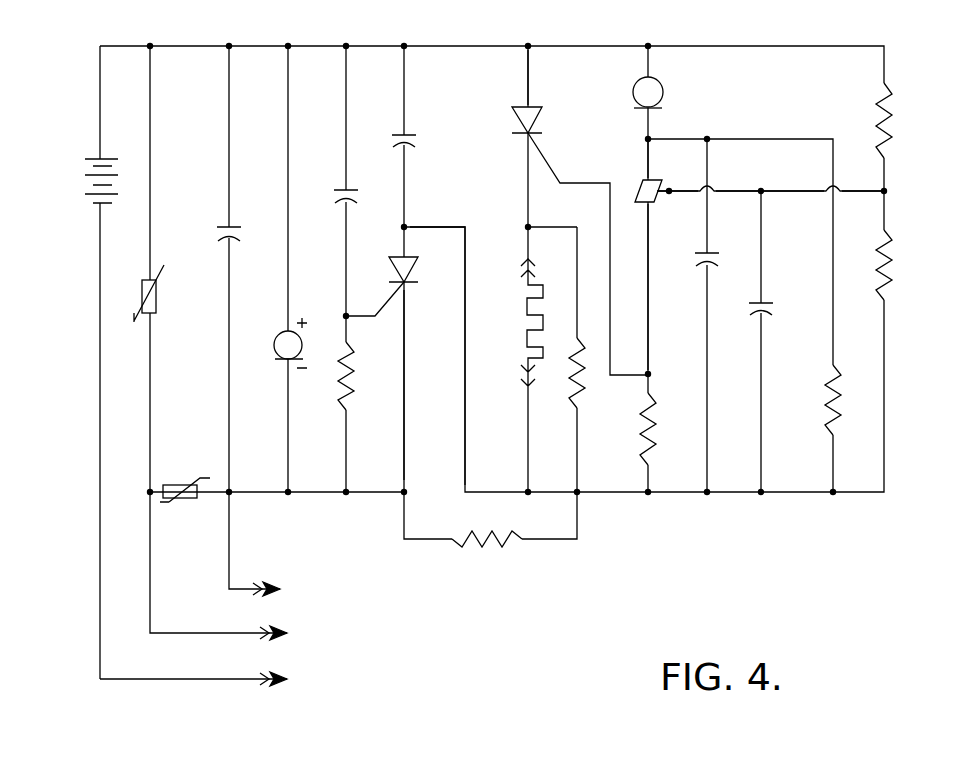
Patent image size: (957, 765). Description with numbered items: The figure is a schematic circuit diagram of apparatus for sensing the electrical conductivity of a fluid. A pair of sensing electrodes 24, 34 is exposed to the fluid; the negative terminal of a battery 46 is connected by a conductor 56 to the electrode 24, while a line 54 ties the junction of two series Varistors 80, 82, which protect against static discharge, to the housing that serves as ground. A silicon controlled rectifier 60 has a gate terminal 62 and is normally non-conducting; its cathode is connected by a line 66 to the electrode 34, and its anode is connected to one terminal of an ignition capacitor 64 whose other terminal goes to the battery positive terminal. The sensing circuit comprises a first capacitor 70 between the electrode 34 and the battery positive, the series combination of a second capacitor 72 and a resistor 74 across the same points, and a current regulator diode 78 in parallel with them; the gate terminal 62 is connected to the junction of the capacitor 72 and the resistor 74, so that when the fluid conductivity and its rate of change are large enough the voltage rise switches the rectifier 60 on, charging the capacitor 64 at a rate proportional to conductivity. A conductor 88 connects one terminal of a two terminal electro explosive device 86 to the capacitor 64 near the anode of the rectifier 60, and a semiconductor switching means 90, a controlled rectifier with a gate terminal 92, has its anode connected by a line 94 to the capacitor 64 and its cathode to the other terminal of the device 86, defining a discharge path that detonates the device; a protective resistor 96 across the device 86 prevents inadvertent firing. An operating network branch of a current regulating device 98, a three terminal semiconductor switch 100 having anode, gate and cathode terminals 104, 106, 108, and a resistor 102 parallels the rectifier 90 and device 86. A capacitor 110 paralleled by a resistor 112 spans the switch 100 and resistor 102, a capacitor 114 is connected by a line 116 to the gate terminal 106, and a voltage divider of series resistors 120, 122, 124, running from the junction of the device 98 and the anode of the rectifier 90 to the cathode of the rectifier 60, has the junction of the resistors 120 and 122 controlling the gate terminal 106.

The sensing electrode 24 is at (280, 680).
The sensing electrode 34 is at (275, 589).
The battery 46 is at (83, 180).
The line 54 is at (213, 633).
The conductor 56 is at (100, 595).
The silicon controlled rectifier 60 is at (415, 270).
The gate terminal 62 is at (388, 296).
The capacitor 64 is at (408, 132).
The line 66 is at (405, 432).
The first capacitor 70 is at (235, 226).
The second capacitor 72 is at (338, 178).
The resistor 74 is at (330, 383).
The current regulator diode 78 is at (273, 345).
The Varistor 80 is at (158, 298).
The Varistor 82 is at (174, 484).
The electro explosive device 86 is at (525, 318).
The conductor 88 is at (466, 418).
The semiconductor switching means 90 is at (512, 120).
The gate terminal 92 is at (552, 163).
The line 94 is at (530, 74).
The protective resistor 96 is at (582, 395).
The current regulating device 98 is at (664, 87).
The three terminal semiconductor switch 100 is at (640, 190).
The resistor 102 is at (660, 422).
The anode terminal 104 is at (656, 184).
The gate terminal 106 is at (669, 192).
The cathode terminal 108 is at (646, 213).
The capacitor 110 is at (711, 255).
The resistor 112 is at (828, 405).
The capacitor 114 is at (764, 303).
The line 116 is at (740, 191).
The resistor 120 is at (890, 104).
The resistor 122 is at (884, 285).
The resistor 124 is at (488, 543).